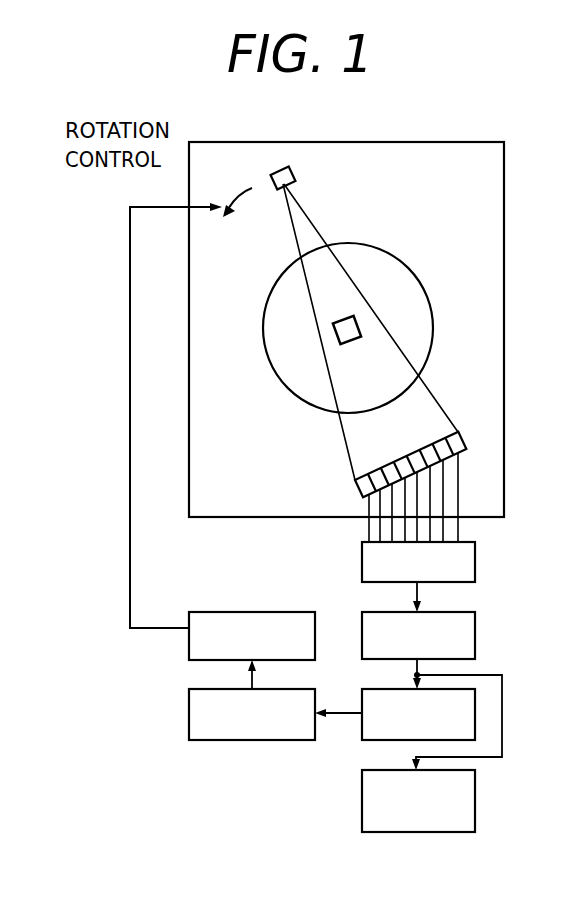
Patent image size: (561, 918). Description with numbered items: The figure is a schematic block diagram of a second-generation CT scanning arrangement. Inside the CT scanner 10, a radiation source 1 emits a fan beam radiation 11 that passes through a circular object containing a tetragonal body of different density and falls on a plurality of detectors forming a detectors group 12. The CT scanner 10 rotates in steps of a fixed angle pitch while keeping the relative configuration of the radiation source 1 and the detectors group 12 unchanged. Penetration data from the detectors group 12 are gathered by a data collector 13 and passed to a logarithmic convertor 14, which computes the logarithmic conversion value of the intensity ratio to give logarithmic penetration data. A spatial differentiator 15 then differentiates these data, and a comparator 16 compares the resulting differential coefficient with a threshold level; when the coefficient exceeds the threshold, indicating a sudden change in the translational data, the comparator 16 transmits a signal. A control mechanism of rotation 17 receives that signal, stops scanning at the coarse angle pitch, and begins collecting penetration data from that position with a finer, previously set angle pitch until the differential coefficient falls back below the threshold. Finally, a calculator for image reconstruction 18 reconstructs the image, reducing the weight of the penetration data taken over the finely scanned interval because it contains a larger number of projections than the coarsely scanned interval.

The radiation source 1 is at (293, 172).
The CT scanner 10 is at (504, 179).
The fan beam radiation 11 is at (437, 392).
The detectors group 12 is at (462, 438).
The data collector 13 is at (477, 555).
The logarithmic convertor 14 is at (477, 630).
The spatial differentiator 15 is at (362, 712).
The comparator 16 is at (188, 712).
The control mechanism of rotation 17 is at (267, 611).
The calculator for image reconstruction 18 is at (362, 792).